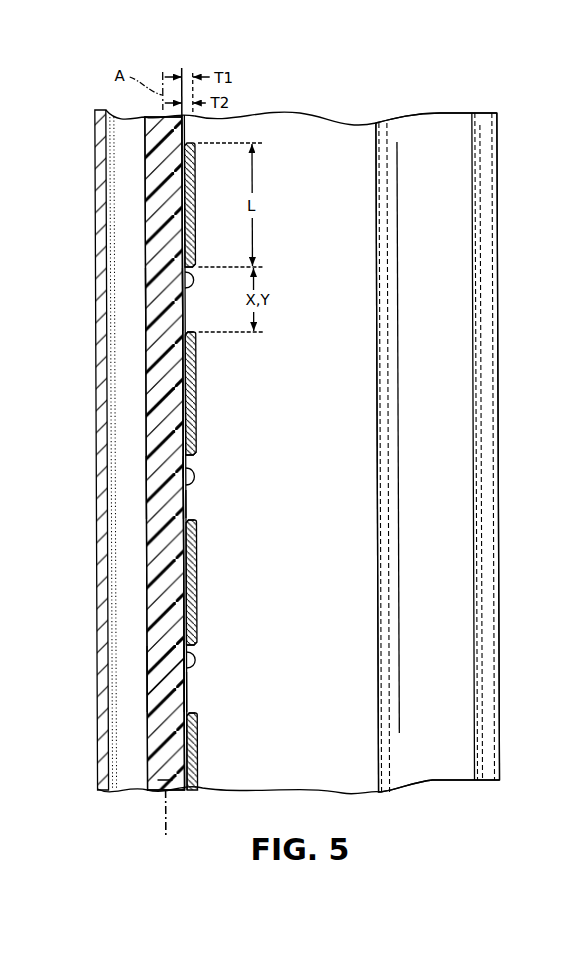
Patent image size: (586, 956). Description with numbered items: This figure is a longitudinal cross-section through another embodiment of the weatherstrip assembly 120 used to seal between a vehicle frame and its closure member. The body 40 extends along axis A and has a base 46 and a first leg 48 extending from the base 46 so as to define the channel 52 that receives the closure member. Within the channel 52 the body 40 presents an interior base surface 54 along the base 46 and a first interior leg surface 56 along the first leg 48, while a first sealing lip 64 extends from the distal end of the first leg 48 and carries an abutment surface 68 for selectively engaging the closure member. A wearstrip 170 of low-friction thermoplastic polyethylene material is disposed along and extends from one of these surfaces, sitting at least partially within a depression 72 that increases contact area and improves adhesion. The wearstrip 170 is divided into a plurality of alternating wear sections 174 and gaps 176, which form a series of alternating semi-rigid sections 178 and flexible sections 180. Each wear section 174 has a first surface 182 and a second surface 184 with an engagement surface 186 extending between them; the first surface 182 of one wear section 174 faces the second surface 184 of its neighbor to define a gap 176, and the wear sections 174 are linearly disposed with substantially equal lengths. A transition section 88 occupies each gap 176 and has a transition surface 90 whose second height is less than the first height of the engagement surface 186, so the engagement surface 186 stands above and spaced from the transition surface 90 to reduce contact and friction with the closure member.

The body 40 is at (140, 132).
The base 46 is at (163, 780).
The first leg 48 is at (357, 130).
The channel 52 is at (302, 125).
The interior base surface 54 is at (178, 470).
The first interior leg surface 56 is at (367, 783).
The first sealing lip 64 is at (438, 135).
The abutment surface 68 is at (458, 221).
The depression 72 is at (148, 405).
The transition section 88 is at (160, 316).
The transition surface 90 is at (185, 305).
The weatherstrip assembly 120 is at (498, 92).
The wearstrip 170 is at (163, 203).
The wear section 174 is at (183, 222).
The gap 176 is at (197, 502).
The semi-rigid section 178 is at (180, 163).
The flexible section 180 is at (178, 283).
The first surface 182 is at (185, 273).
The second surface 184 is at (190, 338).
The engagement surface 186 is at (192, 162).